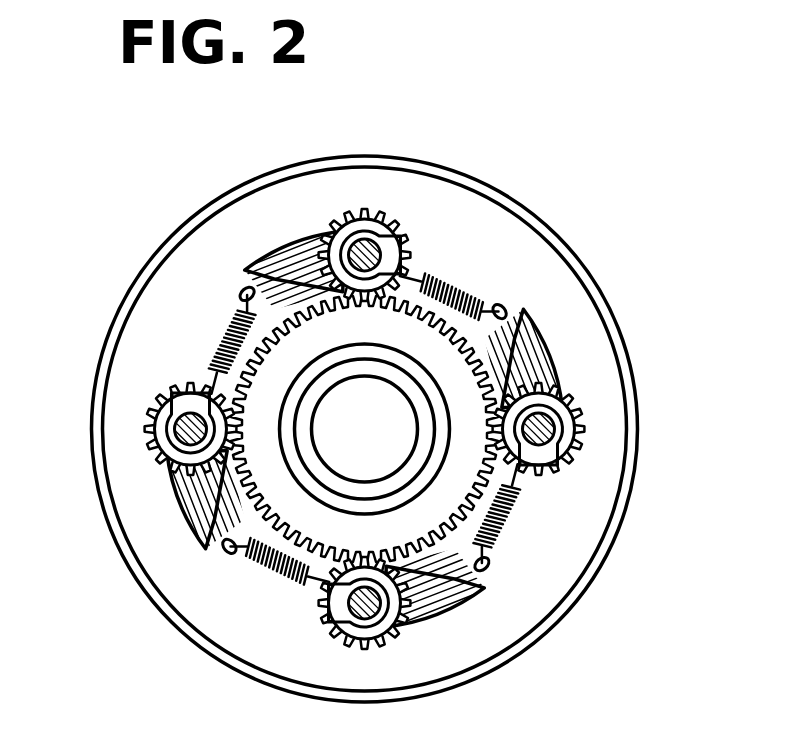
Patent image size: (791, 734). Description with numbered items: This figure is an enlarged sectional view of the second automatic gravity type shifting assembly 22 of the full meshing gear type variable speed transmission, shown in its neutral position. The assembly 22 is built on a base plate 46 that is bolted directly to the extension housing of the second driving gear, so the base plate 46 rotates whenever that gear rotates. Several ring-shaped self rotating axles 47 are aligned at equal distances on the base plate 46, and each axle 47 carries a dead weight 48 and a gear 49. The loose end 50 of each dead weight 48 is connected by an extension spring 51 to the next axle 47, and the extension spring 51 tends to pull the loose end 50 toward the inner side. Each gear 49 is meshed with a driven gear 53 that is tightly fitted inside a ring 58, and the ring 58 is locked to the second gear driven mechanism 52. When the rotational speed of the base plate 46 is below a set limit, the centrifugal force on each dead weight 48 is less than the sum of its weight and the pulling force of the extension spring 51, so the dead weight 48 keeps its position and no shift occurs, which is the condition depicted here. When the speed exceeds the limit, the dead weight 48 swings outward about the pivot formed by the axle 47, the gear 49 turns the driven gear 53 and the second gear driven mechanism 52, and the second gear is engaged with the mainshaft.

The second automatic gravity type shifting assembly 22 is at (519, 196).
The base plate 46 is at (528, 252).
The ring-shaped self rotating axle 47 is at (366, 243).
The dead weight 48 is at (305, 243).
The gear 49 is at (385, 238).
The loose end 50 is at (250, 270).
The extension spring 51 is at (214, 340).
The second gear driven mechanism 52 is at (423, 413).
The driven gear 53 is at (522, 500).
The ring 58 is at (295, 460).